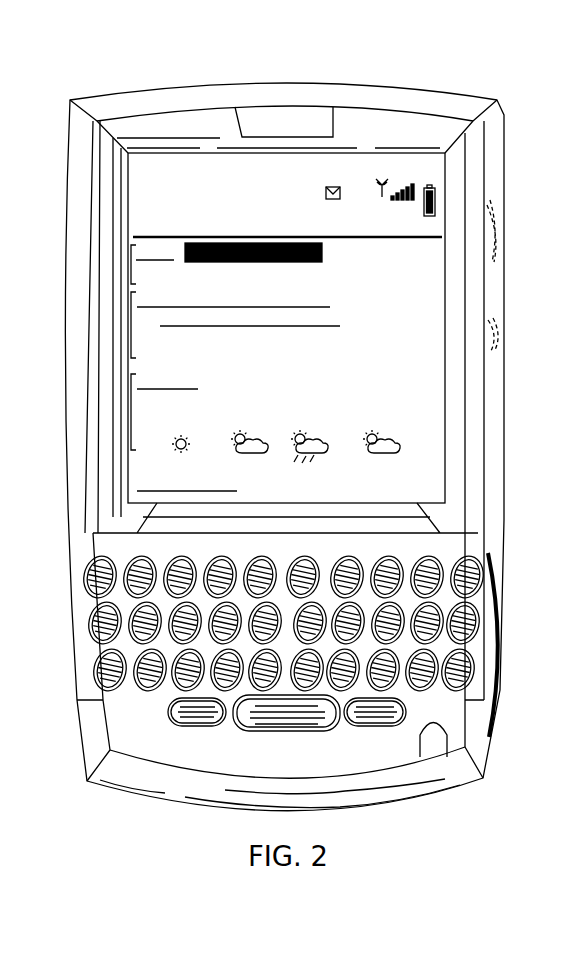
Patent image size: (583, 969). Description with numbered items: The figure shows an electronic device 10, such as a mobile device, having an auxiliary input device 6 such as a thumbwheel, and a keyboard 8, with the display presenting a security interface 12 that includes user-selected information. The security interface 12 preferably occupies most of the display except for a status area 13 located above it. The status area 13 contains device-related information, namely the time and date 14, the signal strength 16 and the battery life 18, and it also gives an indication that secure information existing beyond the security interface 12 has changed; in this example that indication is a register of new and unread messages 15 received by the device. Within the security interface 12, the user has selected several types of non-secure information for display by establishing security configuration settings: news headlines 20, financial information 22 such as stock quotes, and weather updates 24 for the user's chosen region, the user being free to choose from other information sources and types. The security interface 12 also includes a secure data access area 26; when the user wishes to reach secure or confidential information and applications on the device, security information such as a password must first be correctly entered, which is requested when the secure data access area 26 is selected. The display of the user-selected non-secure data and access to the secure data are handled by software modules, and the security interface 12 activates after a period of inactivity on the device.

The auxiliary input device 6 is at (505, 235).
The keyboard 8 is at (502, 646).
The electronic device 10 is at (502, 150).
The security interface 12 is at (417, 427).
The status area 13 is at (250, 187).
The time and date 14 is at (163, 176).
The register of new and unread messages 15 is at (329, 178).
The signal strength 16 is at (402, 177).
The battery life 18 is at (437, 203).
The news headlines 20 is at (130, 252).
The financial information 22 is at (130, 318).
The weather updates 24 is at (130, 405).
The secure data access area 26 is at (130, 478).